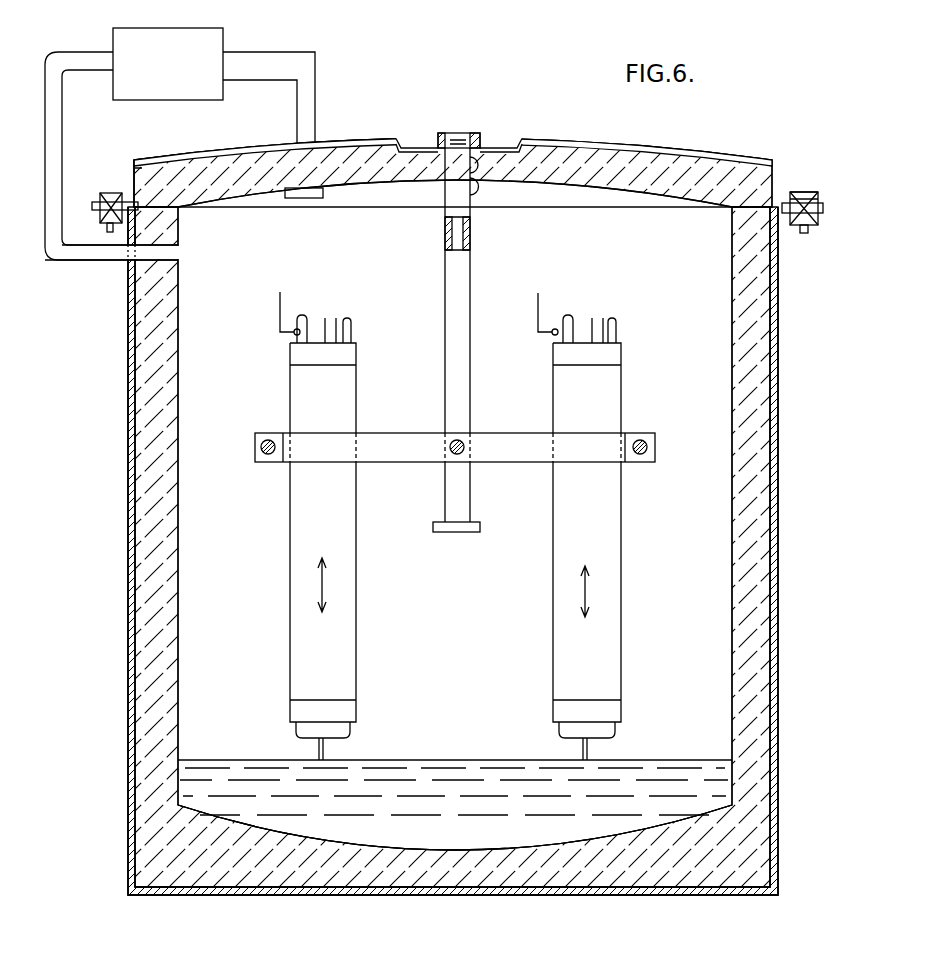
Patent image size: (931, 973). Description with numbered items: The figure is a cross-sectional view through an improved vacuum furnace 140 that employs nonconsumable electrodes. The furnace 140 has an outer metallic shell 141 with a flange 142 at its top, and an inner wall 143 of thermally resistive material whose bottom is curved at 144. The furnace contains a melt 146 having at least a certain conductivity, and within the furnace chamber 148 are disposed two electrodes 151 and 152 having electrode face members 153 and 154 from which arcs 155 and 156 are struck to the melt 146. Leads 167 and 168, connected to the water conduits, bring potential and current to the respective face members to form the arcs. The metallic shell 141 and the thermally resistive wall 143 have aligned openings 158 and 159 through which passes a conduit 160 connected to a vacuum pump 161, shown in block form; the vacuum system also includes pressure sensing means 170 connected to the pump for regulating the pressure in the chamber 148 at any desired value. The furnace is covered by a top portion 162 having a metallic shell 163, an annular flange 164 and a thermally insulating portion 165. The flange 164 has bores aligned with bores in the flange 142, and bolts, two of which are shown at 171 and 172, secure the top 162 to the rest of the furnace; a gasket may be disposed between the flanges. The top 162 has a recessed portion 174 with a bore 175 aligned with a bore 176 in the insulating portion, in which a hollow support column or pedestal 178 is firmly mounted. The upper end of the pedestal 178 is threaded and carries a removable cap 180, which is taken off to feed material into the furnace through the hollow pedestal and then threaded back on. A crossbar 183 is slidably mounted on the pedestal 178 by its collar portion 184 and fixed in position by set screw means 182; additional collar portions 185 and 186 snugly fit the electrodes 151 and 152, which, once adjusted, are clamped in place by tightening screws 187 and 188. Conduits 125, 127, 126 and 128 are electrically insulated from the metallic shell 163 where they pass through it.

The conduit 125 is at (303, 315).
The conduit 126 is at (569, 315).
The conduit 127 is at (351, 327).
The conduit 128 is at (616, 328).
The furnace 140 is at (135, 347).
The outer metallic shell 141 is at (128, 398).
The flange 142 is at (103, 223).
The inner wall 143 is at (160, 331).
The curved bottom 144 is at (392, 850).
The melt 146 is at (452, 788).
The furnace chamber 148 is at (439, 606).
The electrode 151 is at (290, 634).
The electrode 152 is at (553, 648).
The electrode face member 153 is at (296, 733).
The electrode face member 154 is at (559, 734).
The arc 155 is at (324, 751).
The arc 156 is at (588, 751).
The opening 158 is at (128, 262).
The opening 159 is at (178, 252).
The conduit 160 is at (63, 129).
The vacuum pump 161 is at (224, 42).
The top portion 162 is at (181, 132).
The metallic shell 163 is at (134, 168).
The annular flange 164 is at (820, 207).
The thermally insulating portion 165 is at (690, 150).
The lead 167 is at (280, 304).
The lead 168 is at (538, 313).
The pressure sensing means 170 is at (323, 193).
The bolt 171 is at (98, 196).
The bolt 172 is at (804, 192).
The recessed portion 174 is at (397, 140).
The bore 175 is at (472, 176).
The bore 176 is at (479, 190).
The hollow support column 178 is at (471, 289).
The cap 180 is at (447, 134).
The set screw means 182 is at (462, 443).
The crossbar 183 is at (402, 433).
The collar portion 184 is at (445, 462).
The collar portion 185 is at (286, 462).
The collar portion 186 is at (625, 462).
The screw 187 is at (266, 441).
The screw 188 is at (655, 447).